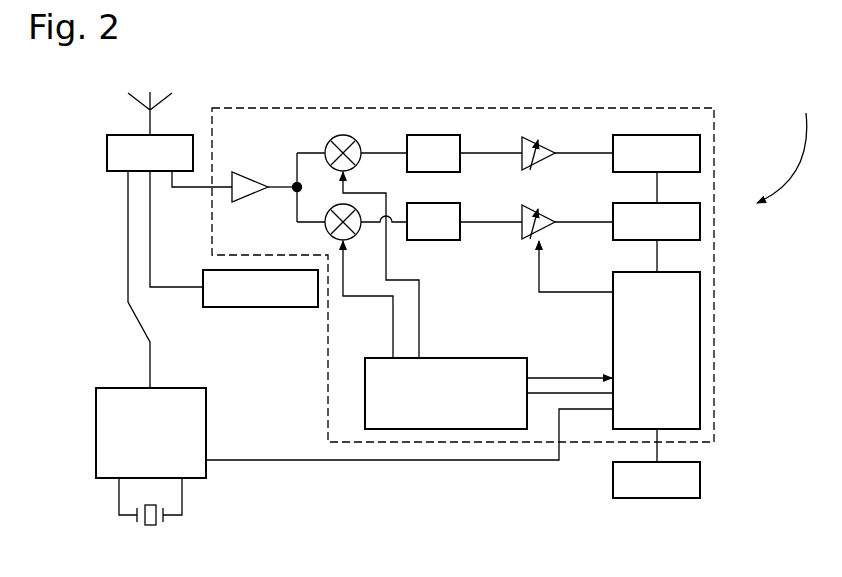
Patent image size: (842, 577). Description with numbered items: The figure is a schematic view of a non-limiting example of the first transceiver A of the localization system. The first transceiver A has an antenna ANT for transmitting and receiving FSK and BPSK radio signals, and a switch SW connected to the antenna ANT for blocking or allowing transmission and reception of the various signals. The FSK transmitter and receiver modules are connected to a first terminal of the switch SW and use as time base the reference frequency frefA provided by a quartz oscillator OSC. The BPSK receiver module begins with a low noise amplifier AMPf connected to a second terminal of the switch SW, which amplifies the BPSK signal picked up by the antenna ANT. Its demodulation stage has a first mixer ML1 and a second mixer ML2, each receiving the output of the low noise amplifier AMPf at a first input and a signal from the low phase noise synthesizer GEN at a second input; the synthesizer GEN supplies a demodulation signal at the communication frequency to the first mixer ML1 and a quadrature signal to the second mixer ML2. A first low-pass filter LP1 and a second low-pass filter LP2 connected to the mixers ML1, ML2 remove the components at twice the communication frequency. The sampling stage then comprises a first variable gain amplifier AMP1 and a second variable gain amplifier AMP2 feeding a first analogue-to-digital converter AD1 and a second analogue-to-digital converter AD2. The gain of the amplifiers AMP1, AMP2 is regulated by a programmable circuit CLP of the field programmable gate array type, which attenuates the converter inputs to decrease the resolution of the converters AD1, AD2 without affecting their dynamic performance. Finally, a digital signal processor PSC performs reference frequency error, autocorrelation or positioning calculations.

The antenna ANT is at (150, 103).
The switch SW is at (150, 153).
The low noise amplifier AMPf is at (267, 198).
The first mixer ML1 is at (320, 152).
The second mixer ML2 is at (320, 224).
The first low-pass filter LP1 is at (433, 153).
The second low-pass filter LP2 is at (433, 221).
The first variable gain amplifier AMP1 is at (559, 161).
The second variable gain amplifier AMP2 is at (566, 229).
The first analogue-to-digital converter AD1 is at (656, 153).
The second analogue-to-digital converter AD2 is at (656, 221).
The programmable circuit CLP is at (656, 350).
The low phase noise synthesizer GEN is at (446, 393).
The digital signal processor PSC is at (656, 480).
The quartz oscillator OSC is at (181, 513).
The reference frequency frefA is at (218, 513).
The first transceiver A is at (785, 146).